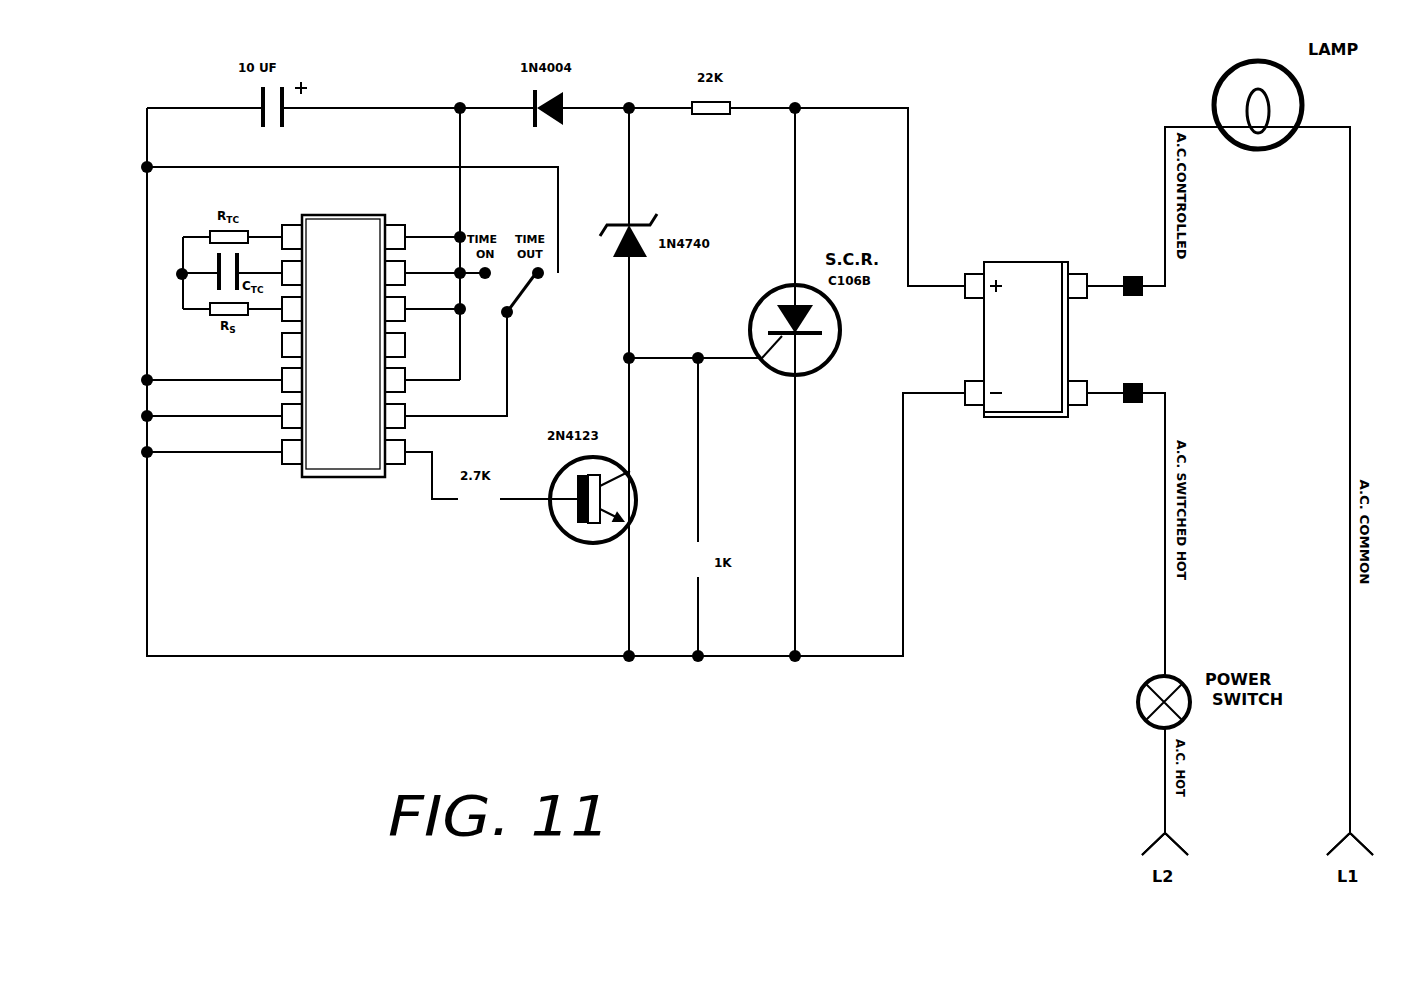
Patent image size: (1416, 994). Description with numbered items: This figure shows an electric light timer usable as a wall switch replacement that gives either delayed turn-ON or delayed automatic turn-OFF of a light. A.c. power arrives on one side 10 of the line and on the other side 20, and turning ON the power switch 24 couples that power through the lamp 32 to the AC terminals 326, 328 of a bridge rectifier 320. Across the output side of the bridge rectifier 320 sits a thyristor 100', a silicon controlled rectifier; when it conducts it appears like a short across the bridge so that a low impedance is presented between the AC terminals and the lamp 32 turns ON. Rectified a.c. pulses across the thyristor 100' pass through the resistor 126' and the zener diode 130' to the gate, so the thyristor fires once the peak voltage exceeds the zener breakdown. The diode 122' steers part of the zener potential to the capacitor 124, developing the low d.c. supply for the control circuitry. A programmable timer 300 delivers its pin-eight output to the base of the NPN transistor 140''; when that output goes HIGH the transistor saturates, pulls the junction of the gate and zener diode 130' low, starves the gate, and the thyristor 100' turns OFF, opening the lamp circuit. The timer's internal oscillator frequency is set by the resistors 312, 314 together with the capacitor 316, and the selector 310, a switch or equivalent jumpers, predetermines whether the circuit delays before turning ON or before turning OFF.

The capacitor 124 is at (297, 99).
The diode 122' is at (591, 81).
The resistor 126' is at (748, 74).
The zener diode 130' is at (659, 212).
The thyristor 100' is at (764, 322).
The NPN transistor 140'' is at (622, 481).
The programmable timer 300 is at (358, 219).
The selector 310 is at (532, 295).
The resistor 312 is at (206, 315).
The resistor 314 is at (208, 226).
The capacitor 316 is at (208, 264).
The bridge rectifier 320 is at (1040, 257).
The AC terminal 326 is at (1135, 272).
The AC terminal 328 is at (1152, 383).
The lamp 32 is at (1214, 87).
The power switch 24 is at (1138, 685).
The other side of the a.c. power line 20 is at (1169, 825).
The one side of the a.c. power line 10 is at (1353, 806).